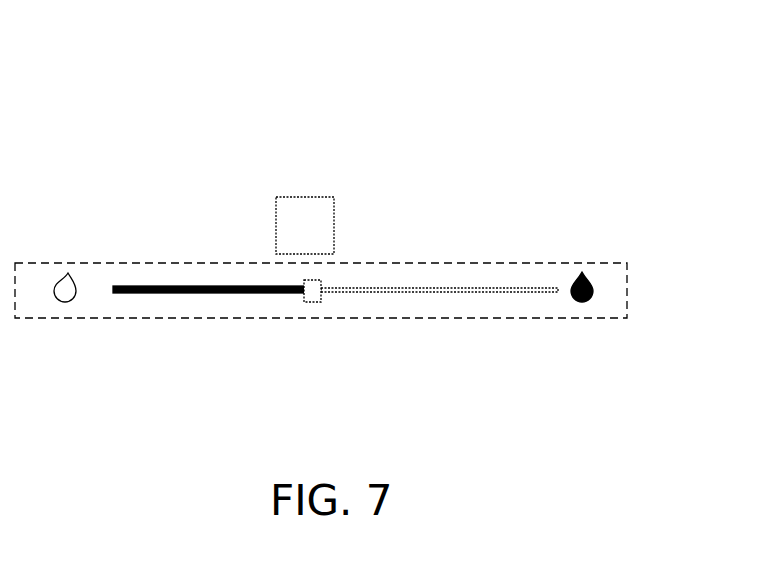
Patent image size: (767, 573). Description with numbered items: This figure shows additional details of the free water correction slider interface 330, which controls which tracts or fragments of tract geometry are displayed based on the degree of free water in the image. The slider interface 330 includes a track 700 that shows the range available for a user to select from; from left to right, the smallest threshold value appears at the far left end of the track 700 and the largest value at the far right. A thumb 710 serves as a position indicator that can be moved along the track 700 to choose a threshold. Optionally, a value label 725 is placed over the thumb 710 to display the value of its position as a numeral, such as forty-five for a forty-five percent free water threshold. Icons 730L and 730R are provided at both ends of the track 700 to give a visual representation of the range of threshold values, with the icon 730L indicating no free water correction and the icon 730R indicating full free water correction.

The free water correction (FWC) slider interface 330 is at (538, 213).
The track 700 is at (165, 289).
The thumb 710 is at (312, 281).
The value label 725 is at (322, 197).
The icon 730L is at (70, 271).
The icon 730R is at (588, 275).